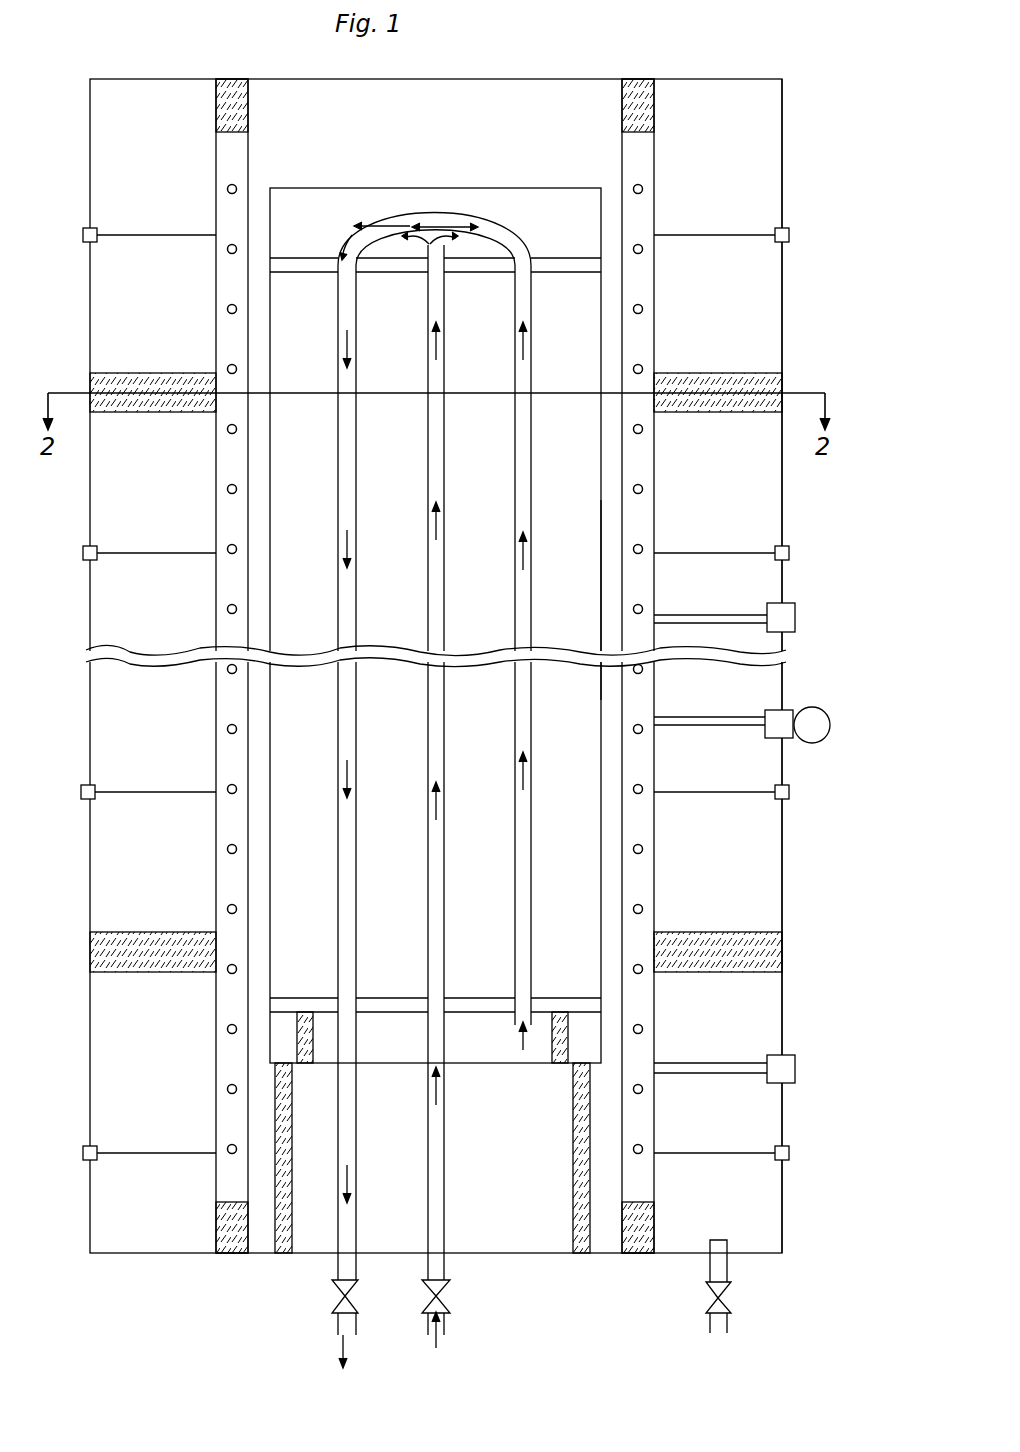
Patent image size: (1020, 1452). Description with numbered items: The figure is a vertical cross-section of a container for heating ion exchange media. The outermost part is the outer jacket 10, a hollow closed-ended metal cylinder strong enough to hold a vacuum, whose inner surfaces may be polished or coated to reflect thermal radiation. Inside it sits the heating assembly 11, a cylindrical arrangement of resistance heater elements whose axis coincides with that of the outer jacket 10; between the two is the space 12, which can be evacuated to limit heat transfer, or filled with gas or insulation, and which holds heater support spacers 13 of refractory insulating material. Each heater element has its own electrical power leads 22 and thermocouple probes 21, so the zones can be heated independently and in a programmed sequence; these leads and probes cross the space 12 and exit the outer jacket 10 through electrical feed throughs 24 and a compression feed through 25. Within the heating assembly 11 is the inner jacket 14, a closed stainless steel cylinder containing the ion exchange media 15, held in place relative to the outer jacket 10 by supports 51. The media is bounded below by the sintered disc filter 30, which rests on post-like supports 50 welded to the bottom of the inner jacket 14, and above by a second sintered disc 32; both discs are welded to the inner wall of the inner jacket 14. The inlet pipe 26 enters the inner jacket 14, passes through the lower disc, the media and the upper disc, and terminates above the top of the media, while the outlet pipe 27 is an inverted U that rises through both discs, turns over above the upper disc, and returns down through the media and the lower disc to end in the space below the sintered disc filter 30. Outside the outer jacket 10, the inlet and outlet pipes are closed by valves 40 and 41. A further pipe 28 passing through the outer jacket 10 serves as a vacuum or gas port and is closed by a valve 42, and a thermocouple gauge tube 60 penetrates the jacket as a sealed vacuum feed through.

The outer jacket 10 is at (722, 79).
The heating assembly 11 is at (640, 364).
The space 12 is at (772, 186).
The heater support spacers 13 is at (234, 90).
The inner jacket 14 is at (603, 472).
The ion exchange media 15 is at (583, 588).
The thermocouple probes 21 is at (755, 622).
The electrical power leads 22 is at (106, 234).
The electrical feed throughs 24 is at (84, 242).
The compression feed through 25 is at (797, 617).
The inlet pipe 26 is at (445, 1160).
The outlet pipe 27 is at (357, 1150).
The pipe 28 is at (728, 1268).
The sintered disc filter 30 is at (400, 1006).
The second sintered disc 32 is at (568, 262).
The valve 40 is at (424, 1290).
The valve 41 is at (334, 1290).
The valve 42 is at (730, 1298).
The supports 50 is at (310, 1040).
The supports 51 is at (292, 1198).
The thermocouple gauge tube 60 is at (826, 730).